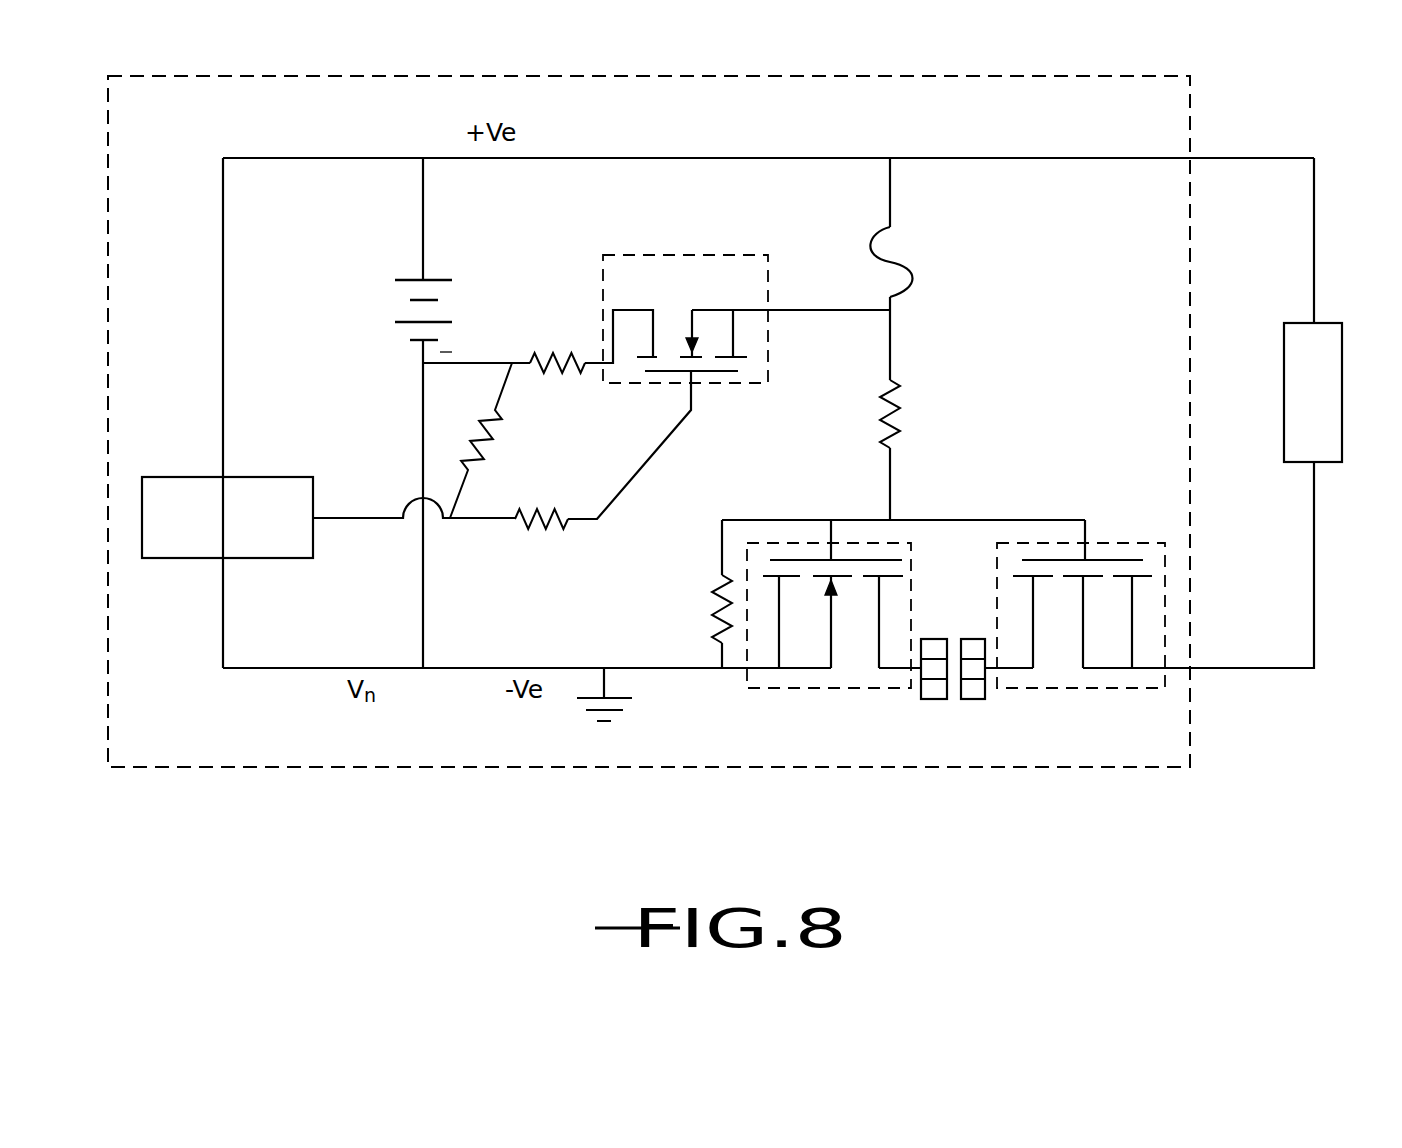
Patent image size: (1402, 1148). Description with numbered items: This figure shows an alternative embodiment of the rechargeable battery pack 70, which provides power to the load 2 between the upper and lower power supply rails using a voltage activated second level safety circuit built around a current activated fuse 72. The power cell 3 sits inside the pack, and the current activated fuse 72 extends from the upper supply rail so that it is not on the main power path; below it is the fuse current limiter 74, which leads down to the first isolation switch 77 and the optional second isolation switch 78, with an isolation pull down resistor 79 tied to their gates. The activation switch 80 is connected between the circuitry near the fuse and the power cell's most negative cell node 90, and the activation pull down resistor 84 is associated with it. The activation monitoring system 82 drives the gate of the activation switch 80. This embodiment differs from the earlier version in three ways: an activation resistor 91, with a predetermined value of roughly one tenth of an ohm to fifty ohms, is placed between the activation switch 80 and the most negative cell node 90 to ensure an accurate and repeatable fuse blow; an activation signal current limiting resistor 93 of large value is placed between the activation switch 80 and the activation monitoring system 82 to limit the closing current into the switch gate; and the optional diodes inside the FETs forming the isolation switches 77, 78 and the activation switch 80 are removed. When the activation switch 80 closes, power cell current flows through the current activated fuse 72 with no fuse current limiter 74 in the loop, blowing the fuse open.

The rechargeable battery pack 70 is at (940, 76).
The power cell 3 is at (387, 302).
The most negative cell node 90 is at (420, 344).
The activation monitoring system 82 is at (195, 477).
The activation pull down resistor 84 is at (494, 450).
The activation resistor 91 is at (564, 353).
The activation signal current limiting resistor 93 is at (533, 540).
The activation switch 80 is at (669, 255).
The current activated fuse 72 is at (905, 262).
The fuse current limiter 74 is at (903, 414).
The first isolation switch 77 is at (848, 543).
The second isolation switch 78 is at (1100, 543).
The isolation pull down resistor 79 is at (717, 621).
The load 2 is at (1343, 335).